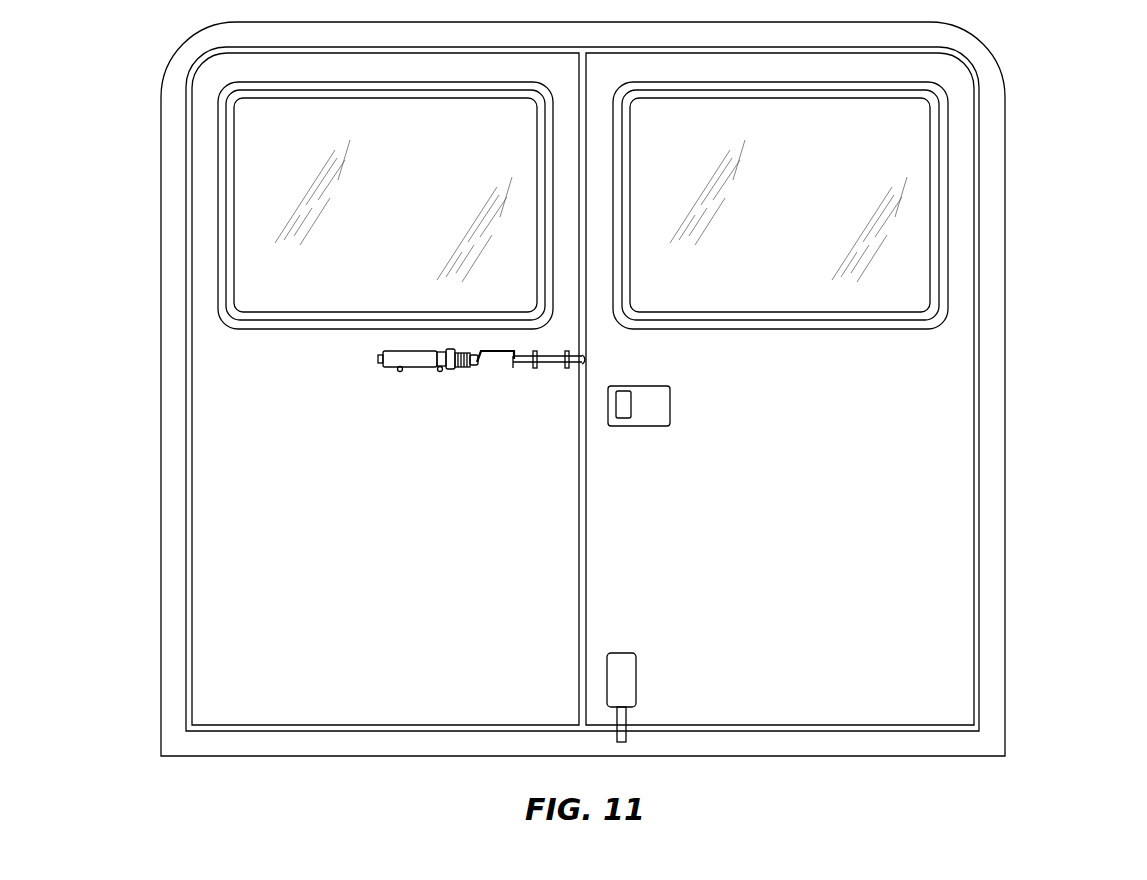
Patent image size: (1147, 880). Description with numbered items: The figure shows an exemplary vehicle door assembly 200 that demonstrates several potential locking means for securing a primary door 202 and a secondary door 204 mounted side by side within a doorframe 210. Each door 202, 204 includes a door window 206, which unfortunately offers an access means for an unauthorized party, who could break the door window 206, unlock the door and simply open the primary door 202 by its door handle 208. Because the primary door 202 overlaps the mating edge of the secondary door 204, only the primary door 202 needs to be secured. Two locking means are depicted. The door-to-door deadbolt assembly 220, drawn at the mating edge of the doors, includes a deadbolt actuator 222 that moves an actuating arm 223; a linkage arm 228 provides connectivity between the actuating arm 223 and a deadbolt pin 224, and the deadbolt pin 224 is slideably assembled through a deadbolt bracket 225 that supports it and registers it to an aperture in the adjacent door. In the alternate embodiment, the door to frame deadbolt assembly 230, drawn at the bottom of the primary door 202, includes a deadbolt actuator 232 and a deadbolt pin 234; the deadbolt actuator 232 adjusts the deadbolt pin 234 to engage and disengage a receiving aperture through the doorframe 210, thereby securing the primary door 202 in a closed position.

The vehicle door assembly 200 is at (1029, 122).
The primary door 202 is at (940, 714).
The secondary door 204 is at (232, 715).
The door window 206 is at (818, 293).
The door handle 208 is at (670, 405).
The doorframe 210 is at (815, 742).
The door-to-door deadbolt assembly 220 is at (460, 362).
The deadbolt actuator 222 is at (410, 371).
The actuating arm 223 is at (473, 366).
The deadbolt pin 224 is at (556, 366).
The deadbolt bracket 225 is at (537, 351).
The linkage arm 228 is at (495, 353).
The door to frame deadbolt assembly 230 is at (622, 694).
The deadbolt actuator 232 is at (637, 676).
The deadbolt pin 234 is at (629, 737).